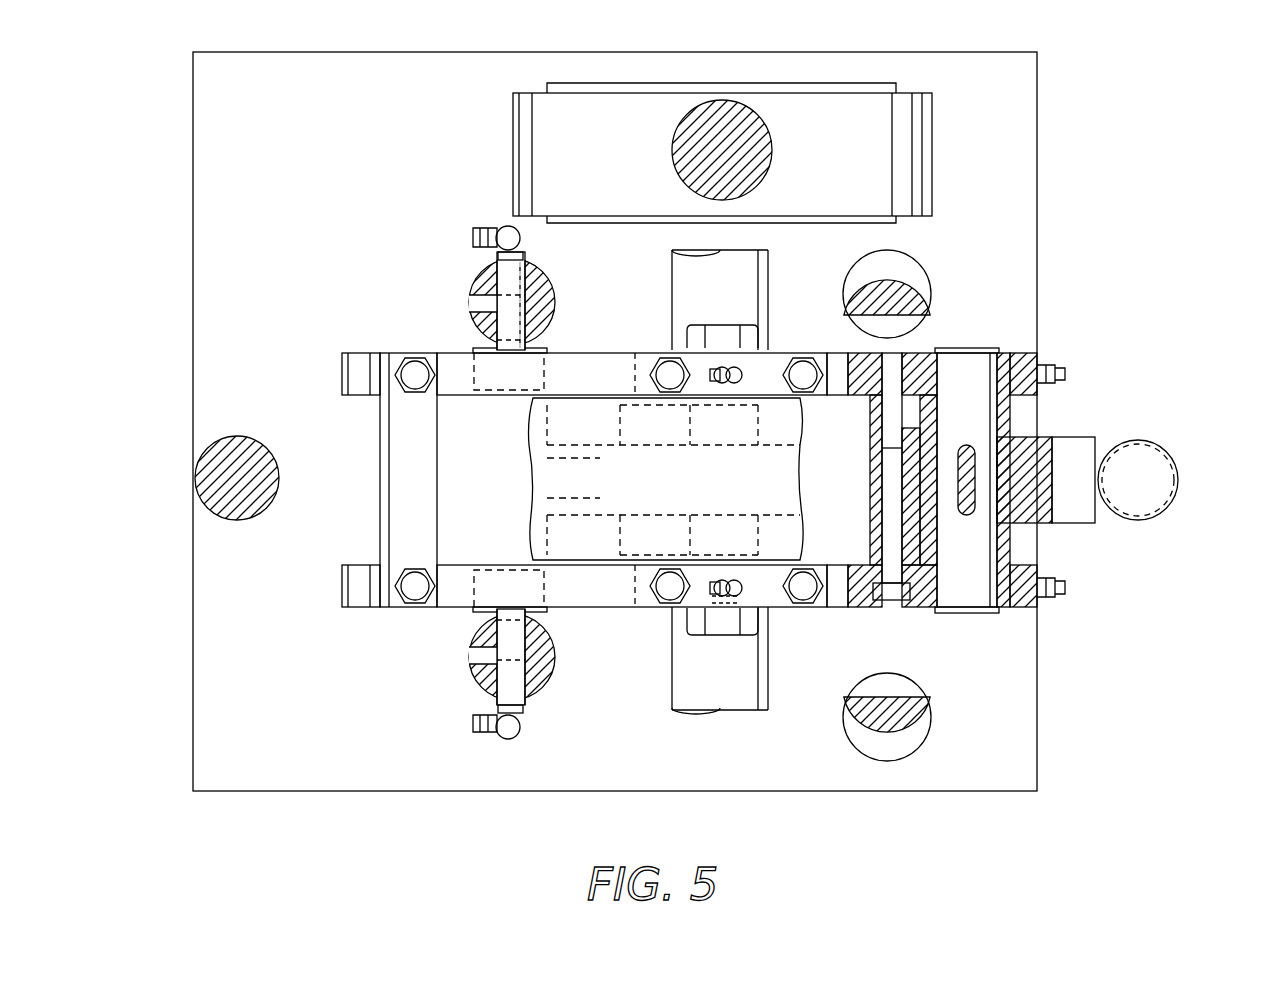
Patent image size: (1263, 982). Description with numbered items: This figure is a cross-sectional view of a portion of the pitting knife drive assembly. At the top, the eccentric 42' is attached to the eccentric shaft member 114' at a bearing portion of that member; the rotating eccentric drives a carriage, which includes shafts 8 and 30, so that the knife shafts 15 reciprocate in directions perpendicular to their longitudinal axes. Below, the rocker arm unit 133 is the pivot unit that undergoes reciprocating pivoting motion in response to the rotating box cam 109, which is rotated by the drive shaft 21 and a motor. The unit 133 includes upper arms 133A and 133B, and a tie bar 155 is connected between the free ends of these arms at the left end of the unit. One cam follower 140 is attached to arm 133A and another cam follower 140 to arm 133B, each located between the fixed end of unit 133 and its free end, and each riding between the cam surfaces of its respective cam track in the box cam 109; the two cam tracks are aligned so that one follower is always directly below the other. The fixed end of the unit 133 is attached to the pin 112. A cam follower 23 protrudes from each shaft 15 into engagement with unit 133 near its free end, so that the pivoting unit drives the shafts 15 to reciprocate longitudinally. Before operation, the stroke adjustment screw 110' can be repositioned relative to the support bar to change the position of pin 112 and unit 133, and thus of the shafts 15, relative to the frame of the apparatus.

The eccentric 42' is at (680, 153).
The eccentric shaft member 114' is at (669, 150).
The shaft 8 is at (920, 280).
The shaft 15 is at (488, 283).
The drive shaft 21 is at (733, 698).
The shaft 30 is at (200, 445).
The rocker arm unit 133 is at (338, 369).
The upper arm 133A is at (568, 600).
The upper arm 133B is at (568, 365).
The tie bar 155 is at (405, 455).
The cam follower 23 is at (513, 393).
The box cam 109 is at (526, 503).
The cam follower 140 is at (713, 527).
The pin 112 is at (968, 605).
The stroke adjustment screw 110' is at (1123, 513).